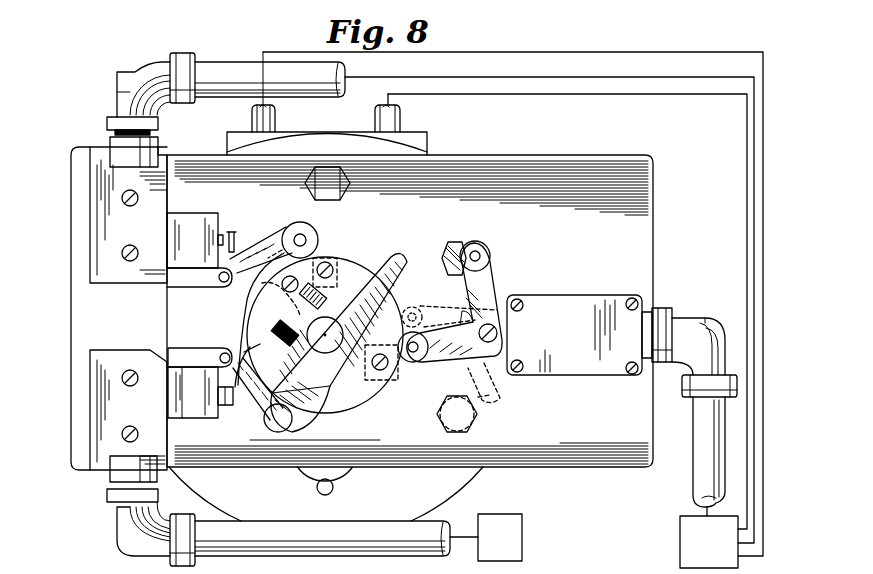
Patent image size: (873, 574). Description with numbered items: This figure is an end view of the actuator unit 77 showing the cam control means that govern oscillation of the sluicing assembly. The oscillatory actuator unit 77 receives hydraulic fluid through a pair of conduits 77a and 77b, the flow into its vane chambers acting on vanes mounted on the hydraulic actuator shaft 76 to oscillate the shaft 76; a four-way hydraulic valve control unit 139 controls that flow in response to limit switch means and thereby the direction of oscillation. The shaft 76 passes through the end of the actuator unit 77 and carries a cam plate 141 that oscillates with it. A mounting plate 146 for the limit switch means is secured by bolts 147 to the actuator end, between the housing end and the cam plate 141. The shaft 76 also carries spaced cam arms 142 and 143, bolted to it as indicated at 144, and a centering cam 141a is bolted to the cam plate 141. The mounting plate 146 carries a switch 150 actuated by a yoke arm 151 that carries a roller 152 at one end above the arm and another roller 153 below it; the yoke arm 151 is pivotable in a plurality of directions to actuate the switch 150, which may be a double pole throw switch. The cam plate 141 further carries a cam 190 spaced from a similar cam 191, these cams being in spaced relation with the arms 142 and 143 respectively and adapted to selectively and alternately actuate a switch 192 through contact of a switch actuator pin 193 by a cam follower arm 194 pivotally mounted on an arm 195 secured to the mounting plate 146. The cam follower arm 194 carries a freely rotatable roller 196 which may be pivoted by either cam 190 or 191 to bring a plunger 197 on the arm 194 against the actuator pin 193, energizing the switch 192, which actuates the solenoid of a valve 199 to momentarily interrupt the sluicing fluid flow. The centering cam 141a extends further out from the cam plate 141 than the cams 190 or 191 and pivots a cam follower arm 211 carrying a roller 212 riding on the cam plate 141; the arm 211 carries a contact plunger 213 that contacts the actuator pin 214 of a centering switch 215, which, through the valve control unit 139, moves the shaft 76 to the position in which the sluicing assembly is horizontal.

The hydraulic actuator shaft 76 is at (333, 328).
The actuator unit 77 is at (502, 480).
The conduit 77a is at (276, 120).
The conduit 77b is at (404, 121).
The four-way hydraulic valve control unit 139 is at (695, 534).
The cam plate 141 is at (328, 172).
The centering cam 141a is at (330, 256).
The cam arm 142 is at (405, 258).
The cam arm 143 is at (300, 398).
The bolt 144 is at (306, 308).
The mounting plate 146 is at (590, 144).
The bolt 147 is at (472, 424).
The switch 150 is at (590, 300).
The yoke arm 151 is at (490, 288).
The roller 152 is at (418, 366).
The roller 153 is at (489, 252).
The cam 190 is at (258, 288).
The cam 191 is at (389, 380).
The switch 192 is at (118, 417).
The switch actuator pin 193 is at (226, 405).
The cam follower arm 194 is at (262, 374).
The arm 195 is at (183, 352).
The roller 196 is at (293, 420).
The plunger 197 is at (246, 352).
The valve 199 is at (522, 537).
The cam follower arm 211 is at (268, 248).
The roller 212 is at (300, 234).
The contact plunger 213 is at (235, 236).
The actuator pin 214 is at (221, 233).
The centering switch 215 is at (187, 222).